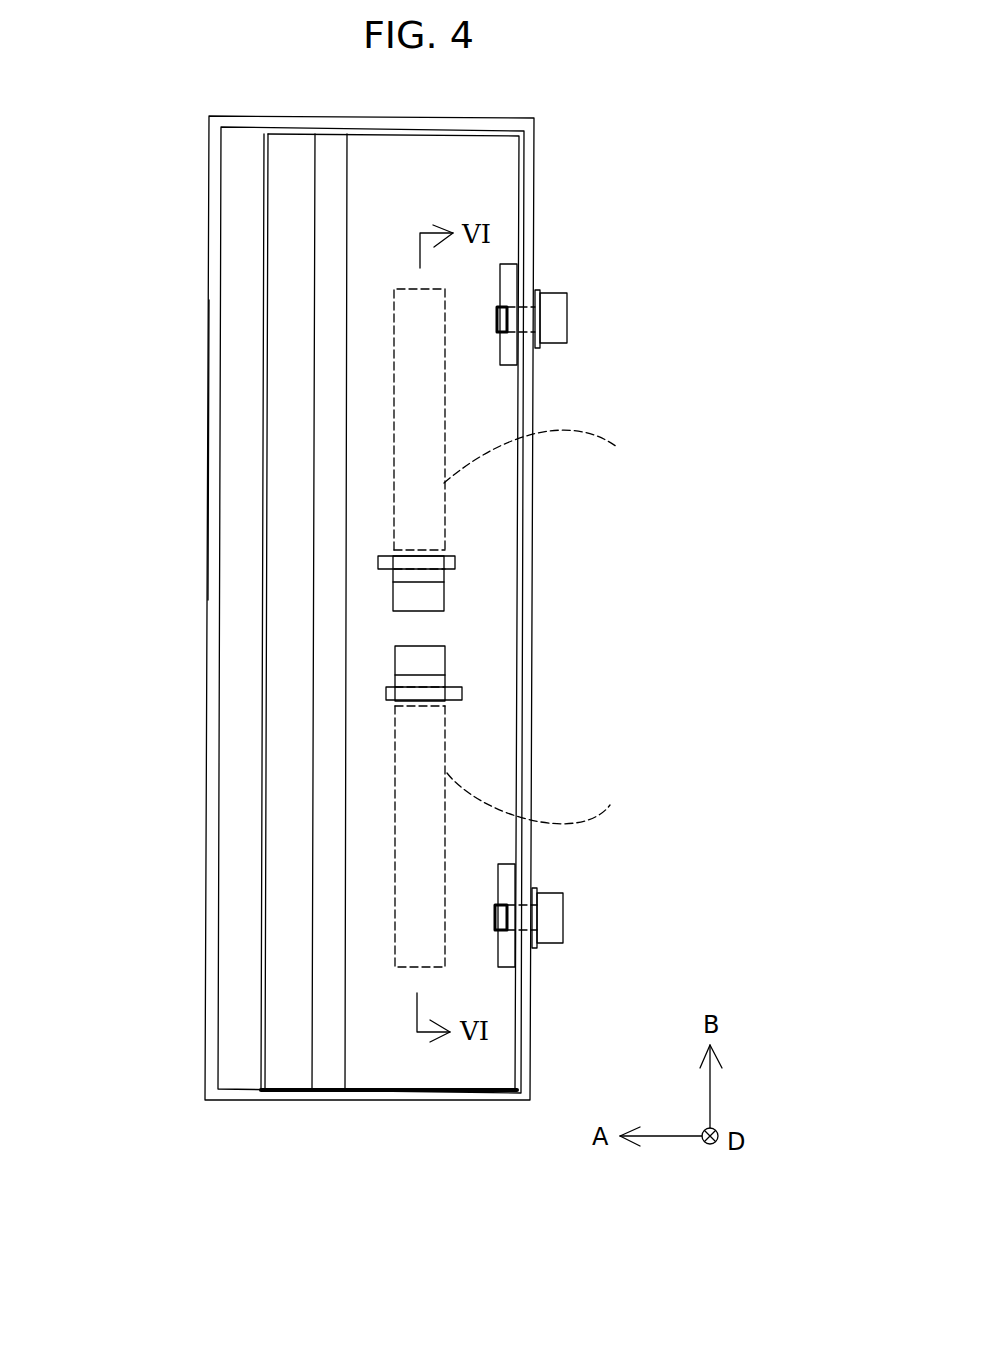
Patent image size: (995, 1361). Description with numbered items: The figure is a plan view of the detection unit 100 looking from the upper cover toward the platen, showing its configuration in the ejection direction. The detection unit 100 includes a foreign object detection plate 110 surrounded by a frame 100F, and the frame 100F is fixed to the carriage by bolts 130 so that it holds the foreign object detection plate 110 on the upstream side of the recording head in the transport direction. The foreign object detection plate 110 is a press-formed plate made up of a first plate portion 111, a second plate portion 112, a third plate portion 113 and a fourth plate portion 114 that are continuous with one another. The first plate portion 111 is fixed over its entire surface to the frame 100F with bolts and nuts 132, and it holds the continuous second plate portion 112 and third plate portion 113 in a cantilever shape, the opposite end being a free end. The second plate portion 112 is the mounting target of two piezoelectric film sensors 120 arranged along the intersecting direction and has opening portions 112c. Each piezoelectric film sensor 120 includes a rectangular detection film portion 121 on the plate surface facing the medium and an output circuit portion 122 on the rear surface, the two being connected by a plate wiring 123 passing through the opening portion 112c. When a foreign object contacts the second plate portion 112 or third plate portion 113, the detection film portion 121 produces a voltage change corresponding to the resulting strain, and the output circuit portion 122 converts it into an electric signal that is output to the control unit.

The detection unit 100 is at (583, 150).
The frame 100F is at (208, 457).
The foreign object detection plate 110 is at (353, 716).
The first plate portion 111 is at (513, 1070).
The second plate portion 112 is at (373, 1075).
The opening portion 112c is at (448, 564).
The third plate portion 113 is at (328, 1080).
The fourth plate portion 114 is at (283, 1082).
The piezoelectric film sensor 120 is at (558, 627).
The detection film portion 121 is at (653, 618).
The output circuit portion 122 is at (433, 598).
The plate wiring 123 is at (428, 577).
The bolt 130 is at (565, 303).
The nut 132 is at (507, 273).